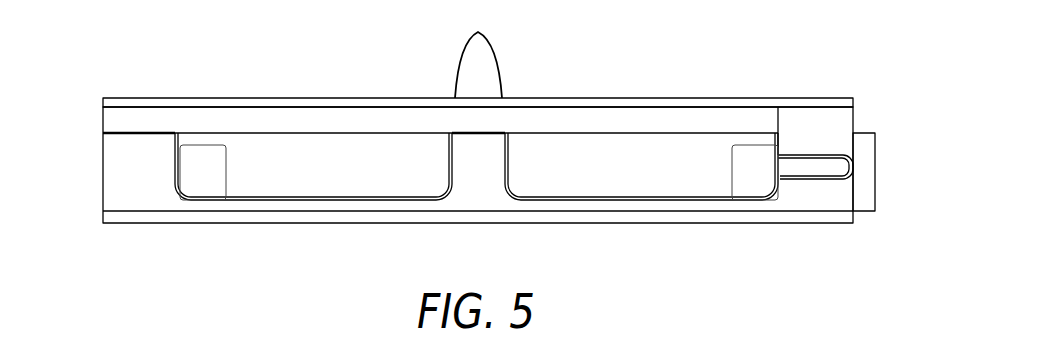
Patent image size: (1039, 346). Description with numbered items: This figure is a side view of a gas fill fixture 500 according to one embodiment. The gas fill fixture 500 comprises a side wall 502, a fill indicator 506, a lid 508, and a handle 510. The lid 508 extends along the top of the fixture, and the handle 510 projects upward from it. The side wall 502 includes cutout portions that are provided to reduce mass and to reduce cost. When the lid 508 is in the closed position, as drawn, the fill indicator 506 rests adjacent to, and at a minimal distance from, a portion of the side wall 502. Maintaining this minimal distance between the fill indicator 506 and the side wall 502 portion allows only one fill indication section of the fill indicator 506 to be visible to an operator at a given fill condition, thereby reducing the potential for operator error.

The gas fill fixture 500 is at (469, 134).
The side wall 502 is at (103, 172).
The fill indicator 506 is at (833, 130).
The lid 508 is at (627, 97).
The handle 510 is at (480, 33).